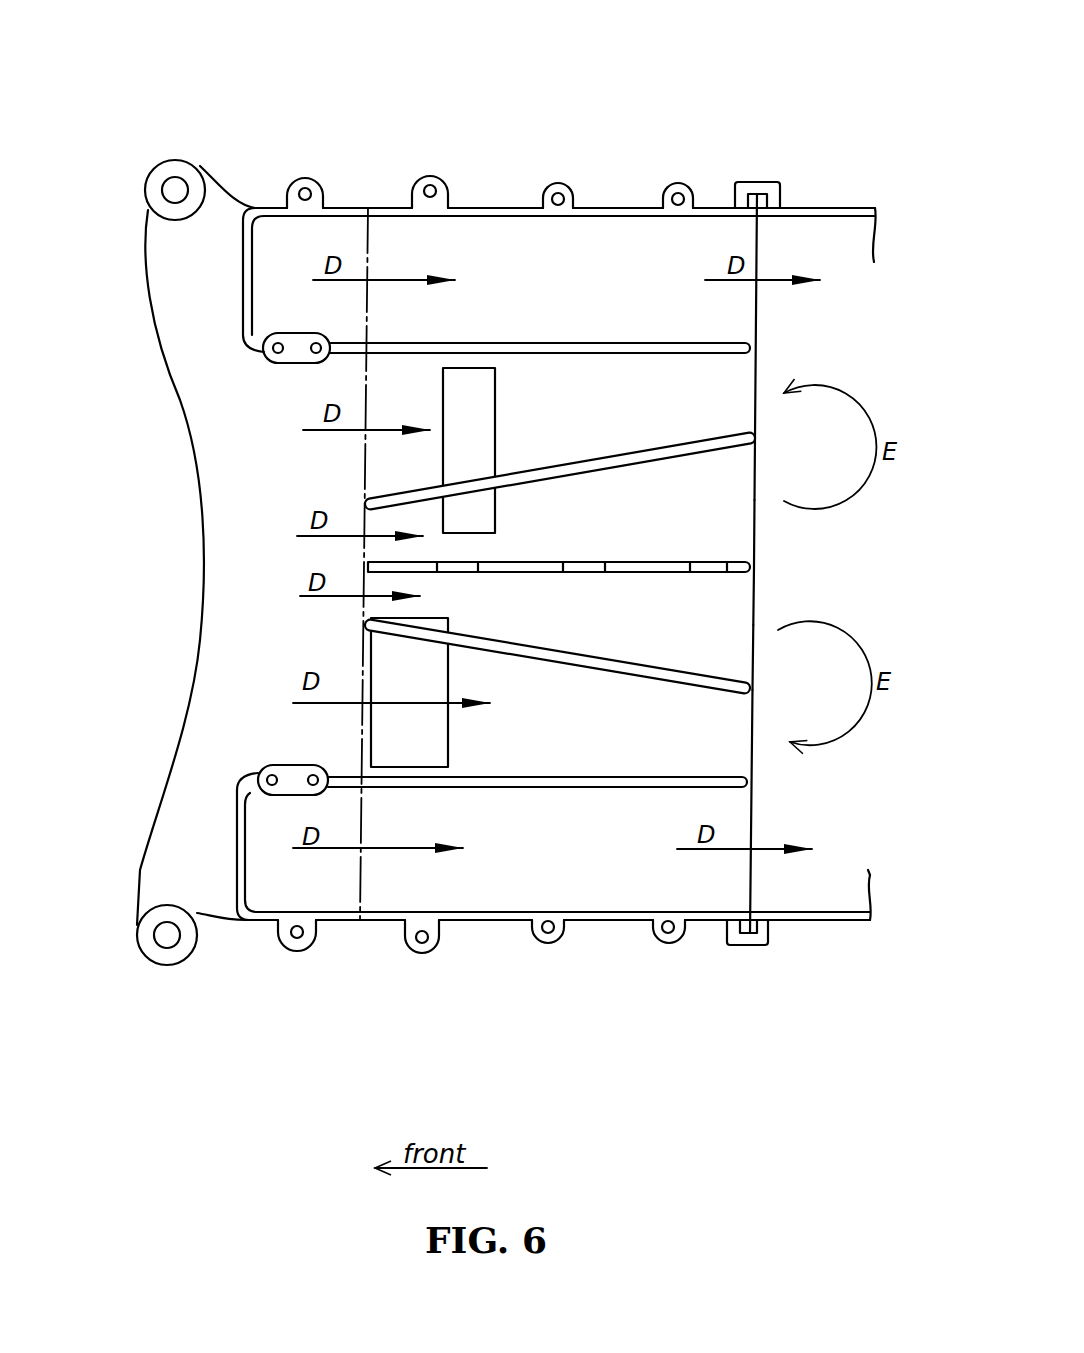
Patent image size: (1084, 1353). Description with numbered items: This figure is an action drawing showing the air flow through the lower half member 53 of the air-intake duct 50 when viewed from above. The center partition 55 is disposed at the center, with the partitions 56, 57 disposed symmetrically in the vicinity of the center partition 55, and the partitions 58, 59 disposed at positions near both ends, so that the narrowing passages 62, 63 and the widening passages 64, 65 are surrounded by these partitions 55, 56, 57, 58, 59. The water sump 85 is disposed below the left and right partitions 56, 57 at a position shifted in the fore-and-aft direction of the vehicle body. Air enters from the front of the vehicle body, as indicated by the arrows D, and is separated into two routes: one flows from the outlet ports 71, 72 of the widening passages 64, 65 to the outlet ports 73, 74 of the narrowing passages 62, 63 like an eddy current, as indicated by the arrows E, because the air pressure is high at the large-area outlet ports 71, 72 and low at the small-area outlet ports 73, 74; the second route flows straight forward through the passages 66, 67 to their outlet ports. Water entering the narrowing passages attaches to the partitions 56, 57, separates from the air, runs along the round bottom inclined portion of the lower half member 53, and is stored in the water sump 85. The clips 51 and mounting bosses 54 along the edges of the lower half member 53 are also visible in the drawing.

The air-intake duct 50 is at (548, 118).
The clip 51 is at (762, 182).
The lower half member 53 is at (598, 198).
The mounting boss 54 is at (420, 177).
The center partition 55 is at (525, 560).
The partition 56 is at (533, 470).
The partition 57 is at (537, 647).
The partition 58 is at (518, 342).
The partition 59 is at (515, 775).
The narrowing passage 62 is at (413, 373).
The narrowing passage 63 is at (368, 745).
The widening passage 64 is at (703, 487).
The widening passage 65 is at (717, 647).
The passage 66 is at (492, 243).
The passage 67 is at (533, 882).
The outlet port 71 is at (755, 530).
The outlet port 72 is at (755, 602).
The outlet port 73 is at (757, 412).
The outlet port 74 is at (752, 723).
The water sump 85 is at (465, 455).